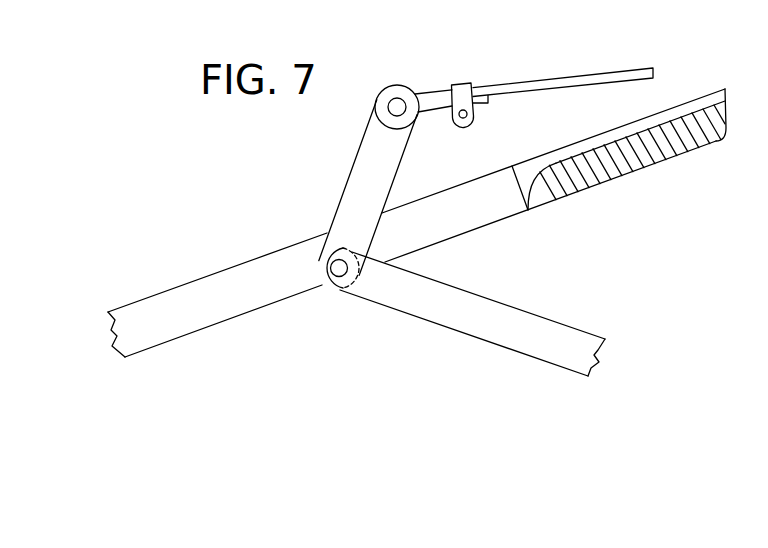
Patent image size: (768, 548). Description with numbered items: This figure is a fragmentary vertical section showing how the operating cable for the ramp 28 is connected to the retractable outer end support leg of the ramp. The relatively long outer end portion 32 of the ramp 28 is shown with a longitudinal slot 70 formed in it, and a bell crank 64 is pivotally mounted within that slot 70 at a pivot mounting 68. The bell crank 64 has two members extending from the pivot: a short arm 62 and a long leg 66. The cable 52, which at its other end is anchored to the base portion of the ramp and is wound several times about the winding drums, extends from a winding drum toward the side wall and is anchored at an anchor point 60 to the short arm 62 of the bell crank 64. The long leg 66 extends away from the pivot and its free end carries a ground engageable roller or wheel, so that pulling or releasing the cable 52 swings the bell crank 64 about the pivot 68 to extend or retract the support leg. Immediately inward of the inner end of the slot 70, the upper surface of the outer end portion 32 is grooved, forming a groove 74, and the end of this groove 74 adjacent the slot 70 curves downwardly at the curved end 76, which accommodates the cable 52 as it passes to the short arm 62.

The ramp 28 is at (596, 185).
The outer end portion 32 is at (690, 150).
The cable 52 is at (553, 79).
The anchor 60 is at (421, 93).
The short arm 62 is at (358, 170).
The bell crank 64 is at (424, 316).
The long leg 66 is at (575, 331).
The pivot mounting 68 is at (337, 276).
The longitudinal slot 70 is at (235, 306).
The groove 74 is at (697, 104).
The downwardly curved end 76 is at (522, 193).